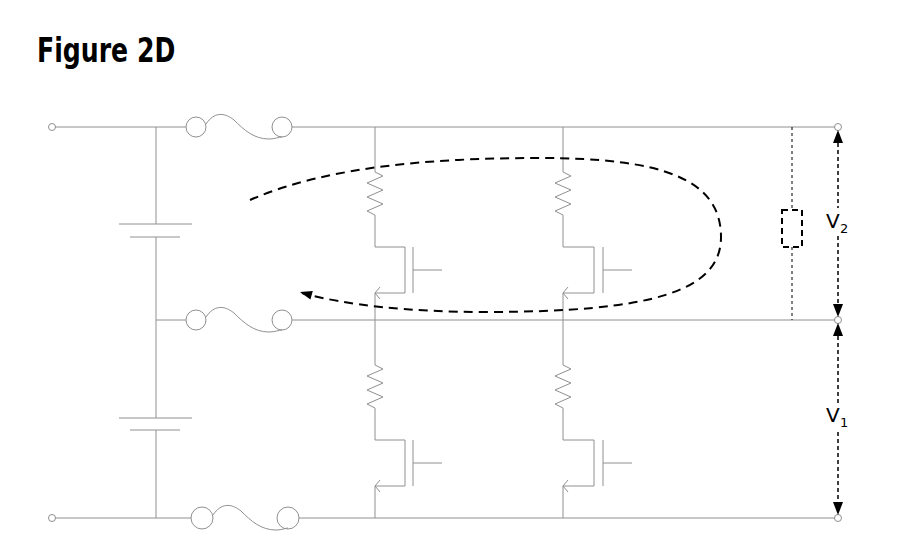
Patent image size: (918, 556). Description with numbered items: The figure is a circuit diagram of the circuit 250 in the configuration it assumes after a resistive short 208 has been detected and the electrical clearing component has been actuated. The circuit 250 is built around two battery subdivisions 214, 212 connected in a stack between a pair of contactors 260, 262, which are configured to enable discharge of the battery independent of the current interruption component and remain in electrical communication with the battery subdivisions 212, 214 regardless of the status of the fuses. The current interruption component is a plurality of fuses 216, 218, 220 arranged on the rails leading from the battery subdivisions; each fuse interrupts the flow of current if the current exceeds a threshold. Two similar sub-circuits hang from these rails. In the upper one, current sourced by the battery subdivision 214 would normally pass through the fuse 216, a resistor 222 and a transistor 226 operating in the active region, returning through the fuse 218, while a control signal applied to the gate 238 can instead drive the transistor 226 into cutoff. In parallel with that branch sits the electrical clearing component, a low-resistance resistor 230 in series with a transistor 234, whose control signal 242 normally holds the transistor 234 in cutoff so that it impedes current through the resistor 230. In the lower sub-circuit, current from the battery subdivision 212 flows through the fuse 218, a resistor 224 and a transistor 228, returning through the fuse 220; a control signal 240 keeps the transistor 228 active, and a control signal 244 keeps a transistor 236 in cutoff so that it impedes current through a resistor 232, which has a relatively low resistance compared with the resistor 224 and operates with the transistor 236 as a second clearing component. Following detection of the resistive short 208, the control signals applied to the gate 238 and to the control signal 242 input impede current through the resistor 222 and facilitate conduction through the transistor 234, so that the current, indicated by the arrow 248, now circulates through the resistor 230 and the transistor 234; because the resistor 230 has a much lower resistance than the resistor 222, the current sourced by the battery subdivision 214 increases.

The circuit 250 is at (416, 80).
The contactor 260 is at (53, 124).
The contactor 262 is at (53, 514).
The fuse 216 is at (219, 113).
The fuse 218 is at (221, 306).
The fuse 220 is at (228, 503).
The battery subdivision 214 is at (128, 222).
The battery subdivision 212 is at (130, 414).
The resistor 222 is at (370, 216).
The resistor 224 is at (370, 409).
The low-resistance resistor 230 is at (562, 216).
The resistor 232 is at (572, 383).
The transistor 226 is at (384, 245).
The transistor 228 is at (385, 438).
The transistor 234 is at (585, 246).
The transistor 236 is at (585, 440).
The gate 238 is at (423, 268).
The control signal 240 is at (425, 460).
The control signal 242 is at (622, 267).
The control signal 244 is at (622, 460).
The resistive short 208 is at (783, 215).
The arrow 248 is at (698, 265).